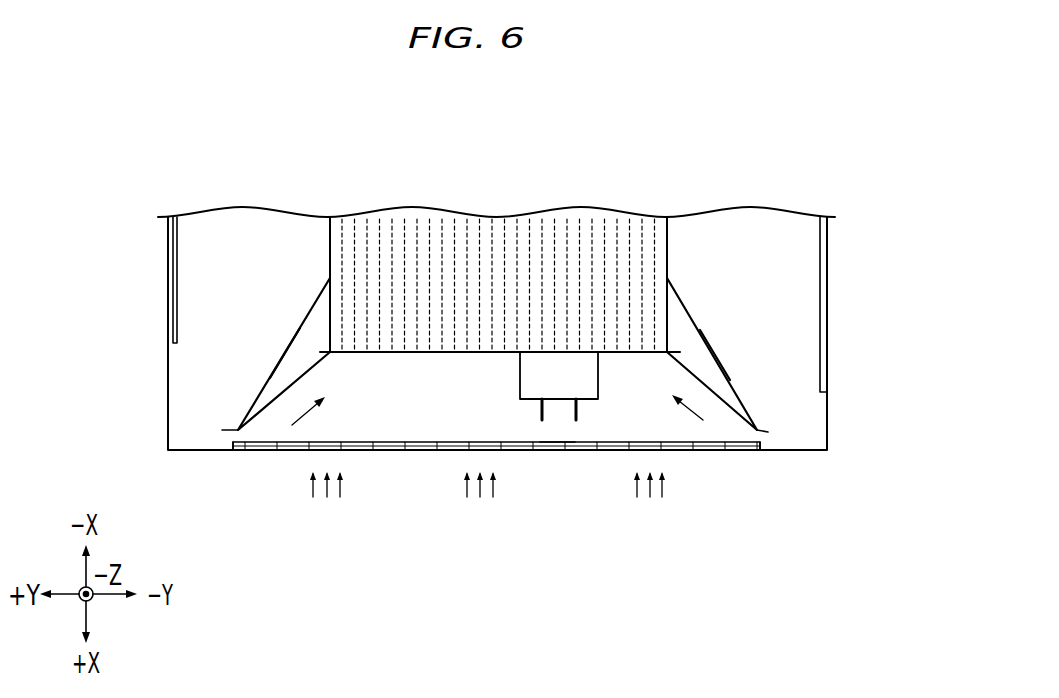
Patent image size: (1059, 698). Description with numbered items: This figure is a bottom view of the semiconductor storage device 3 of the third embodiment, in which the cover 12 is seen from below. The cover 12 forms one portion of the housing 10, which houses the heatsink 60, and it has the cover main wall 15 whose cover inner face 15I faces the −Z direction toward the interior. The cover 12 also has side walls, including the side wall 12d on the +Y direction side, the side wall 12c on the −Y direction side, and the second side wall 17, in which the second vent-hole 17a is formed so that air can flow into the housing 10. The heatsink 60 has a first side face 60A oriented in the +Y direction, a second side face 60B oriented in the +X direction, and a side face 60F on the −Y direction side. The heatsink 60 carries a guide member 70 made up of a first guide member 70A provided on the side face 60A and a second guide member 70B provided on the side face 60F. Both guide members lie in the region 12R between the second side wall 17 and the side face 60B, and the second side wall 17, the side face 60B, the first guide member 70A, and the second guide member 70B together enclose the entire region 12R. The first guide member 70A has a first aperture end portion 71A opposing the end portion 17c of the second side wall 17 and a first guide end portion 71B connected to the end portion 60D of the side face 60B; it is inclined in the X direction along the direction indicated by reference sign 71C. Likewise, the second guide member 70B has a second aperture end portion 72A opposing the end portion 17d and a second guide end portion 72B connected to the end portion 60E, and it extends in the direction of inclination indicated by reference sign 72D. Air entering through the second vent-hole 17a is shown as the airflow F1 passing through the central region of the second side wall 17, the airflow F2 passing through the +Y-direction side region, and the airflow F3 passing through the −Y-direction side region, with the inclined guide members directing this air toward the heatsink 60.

The semiconductor storage device 3 is at (430, 137).
The housing 10 is at (500, 333).
The cover 12 is at (500, 333).
The side wall 12c is at (828, 287).
The side wall 12d is at (170, 288).
The region 12R is at (506, 410).
The cover main wall 15 is at (537, 213).
The cover inner face 15I is at (747, 243).
The second side wall 17 is at (432, 452).
The second vent-hole 17a is at (557, 447).
The end portion 17c is at (240, 452).
The end portion 17d is at (748, 450).
The heatsink 60 is at (539, 373).
The first side face 60A is at (330, 305).
The second side face 60B is at (436, 390).
The end portion 60D is at (330, 352).
The end portion 60E is at (667, 352).
The side face 60F is at (667, 312).
The guide member 70 is at (487, 442).
The first guide member 70A is at (280, 378).
The second guide member 70B is at (723, 392).
The first aperture end portion 71A is at (222, 432).
The first guide end portion 71B is at (330, 352).
The direction of inclination 71C is at (310, 410).
The second aperture end portion 72A is at (768, 432).
The second guide end portion 72B is at (667, 353).
The direction of inclination 72D is at (675, 410).
The airflow F1 is at (493, 490).
The airflow F2 is at (342, 492).
The airflow F3 is at (665, 490).